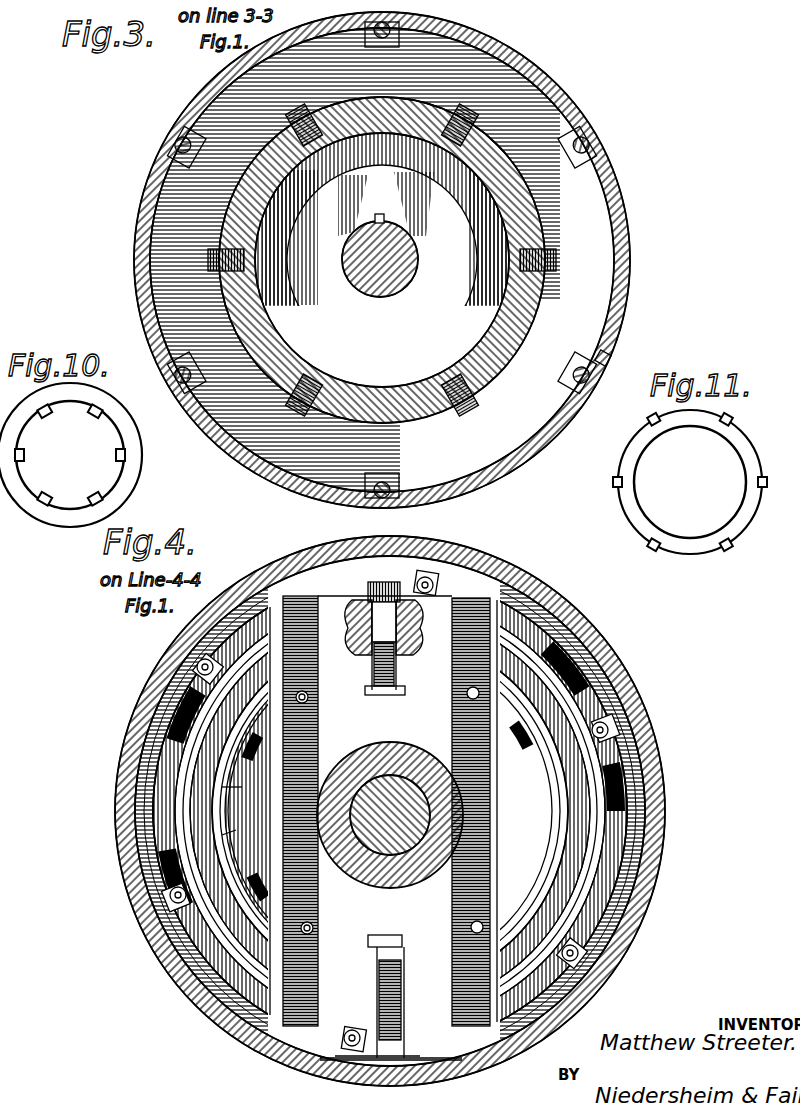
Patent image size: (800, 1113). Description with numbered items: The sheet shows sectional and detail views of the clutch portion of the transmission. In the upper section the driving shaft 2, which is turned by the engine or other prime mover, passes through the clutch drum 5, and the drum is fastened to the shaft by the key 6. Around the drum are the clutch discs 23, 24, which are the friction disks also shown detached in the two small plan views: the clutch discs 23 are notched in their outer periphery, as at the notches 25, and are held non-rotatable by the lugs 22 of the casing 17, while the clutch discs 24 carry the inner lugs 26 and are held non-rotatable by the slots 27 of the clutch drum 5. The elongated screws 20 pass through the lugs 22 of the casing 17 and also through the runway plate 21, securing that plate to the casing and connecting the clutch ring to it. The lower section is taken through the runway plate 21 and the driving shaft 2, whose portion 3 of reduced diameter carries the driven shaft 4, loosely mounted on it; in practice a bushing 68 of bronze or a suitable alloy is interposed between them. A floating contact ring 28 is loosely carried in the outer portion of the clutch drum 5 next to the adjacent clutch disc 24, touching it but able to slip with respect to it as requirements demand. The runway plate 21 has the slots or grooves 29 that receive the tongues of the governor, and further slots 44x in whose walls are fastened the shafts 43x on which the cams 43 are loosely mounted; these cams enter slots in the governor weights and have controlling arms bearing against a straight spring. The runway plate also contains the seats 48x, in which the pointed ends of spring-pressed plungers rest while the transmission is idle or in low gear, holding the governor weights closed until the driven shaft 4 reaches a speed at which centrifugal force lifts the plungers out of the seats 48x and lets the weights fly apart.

In FIG. 3, the driving shaft 2 is at (380, 259).
In FIG. 4, the portion of reduced diameter 3 is at (390, 815).
In FIG. 4, the driven shaft 4 is at (418, 755).
In FIG. 3, the clutch drum 5 is at (383, 260).
In FIG. 3, the key 6 is at (385, 220).
In FIG. 3, the casing 17 is at (549, 96).
In FIG. 4, the casing 17 is at (641, 797).
In FIG. 3, the elongated screws 20 is at (590, 142).
In FIG. 4, the elongated screws 20 is at (428, 582).
In FIG. 4, the runway plate 21 is at (442, 1062).
In FIG. 3, the lugs 22 is at (606, 162).
In FIG. 4, the lugs 22 is at (646, 735).
In FIG. 3, the clutch discs 23 is at (536, 303).
In FIG. 11, the clutch discs 23 is at (636, 460).
In FIG. 4, the clutch discs 23 is at (162, 713).
In FIG. 3, the clutch discs 24 is at (237, 262).
In FIG. 10, the clutch discs 24 is at (135, 455).
In FIG. 4, the clutch discs 24 is at (219, 842).
In FIG. 3, the notches 25 is at (606, 361).
In FIG. 11, the notches 25 is at (617, 480).
In FIG. 4, the notches 25 is at (221, 745).
In FIG. 3, the inner lugs 26 is at (450, 372).
In FIG. 10, the inner lugs 26 is at (94, 416).
In FIG. 3, the slots 27 is at (321, 384).
In FIG. 4, the slots 27 is at (617, 668).
In FIG. 4, the floating contact ring 28 is at (634, 767).
In FIG. 4, the slots or grooves 29 is at (319, 598).
In FIG. 4, the cams 43 is at (372, 668).
In FIG. 4, the shafts 43x is at (399, 622).
In FIG. 4, the slots 44x is at (406, 841).
In FIG. 4, the seats 48x is at (309, 699).
In FIG. 4, the bushing 68 is at (384, 971).